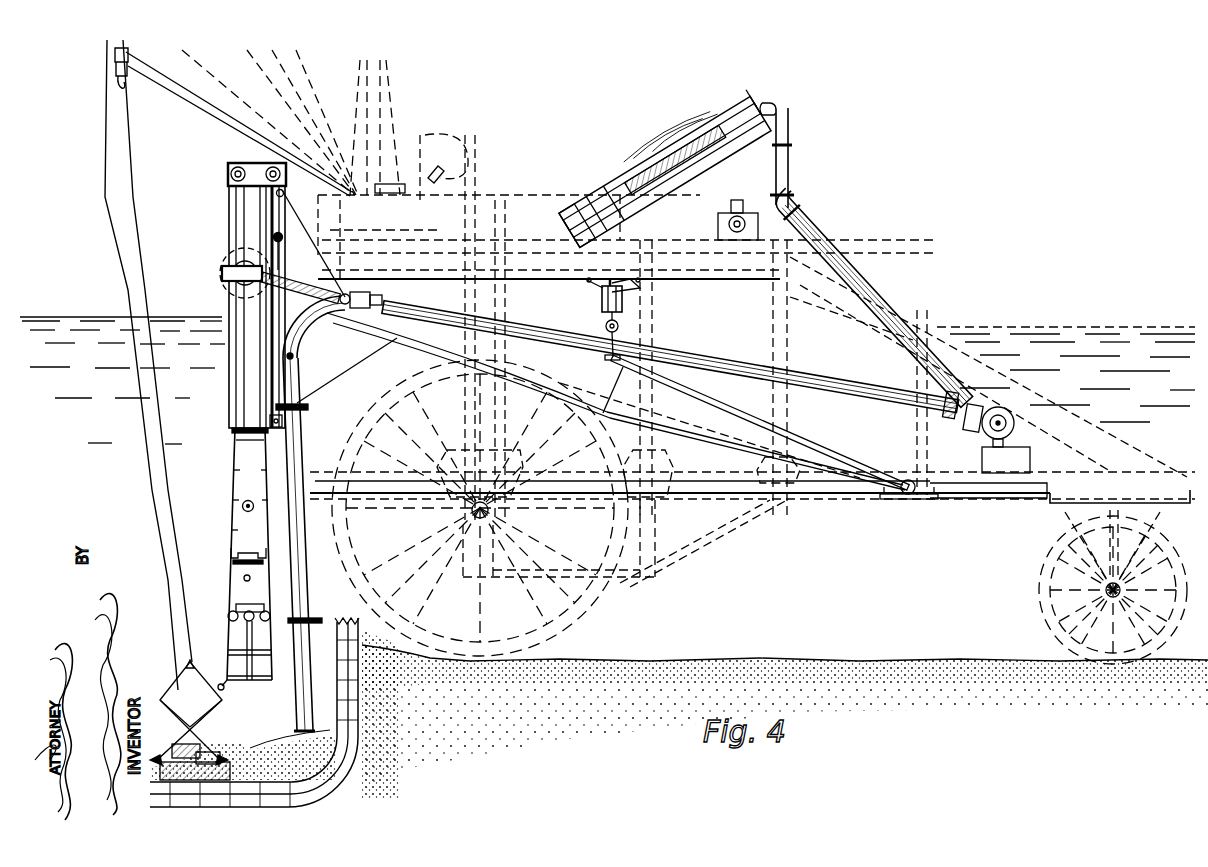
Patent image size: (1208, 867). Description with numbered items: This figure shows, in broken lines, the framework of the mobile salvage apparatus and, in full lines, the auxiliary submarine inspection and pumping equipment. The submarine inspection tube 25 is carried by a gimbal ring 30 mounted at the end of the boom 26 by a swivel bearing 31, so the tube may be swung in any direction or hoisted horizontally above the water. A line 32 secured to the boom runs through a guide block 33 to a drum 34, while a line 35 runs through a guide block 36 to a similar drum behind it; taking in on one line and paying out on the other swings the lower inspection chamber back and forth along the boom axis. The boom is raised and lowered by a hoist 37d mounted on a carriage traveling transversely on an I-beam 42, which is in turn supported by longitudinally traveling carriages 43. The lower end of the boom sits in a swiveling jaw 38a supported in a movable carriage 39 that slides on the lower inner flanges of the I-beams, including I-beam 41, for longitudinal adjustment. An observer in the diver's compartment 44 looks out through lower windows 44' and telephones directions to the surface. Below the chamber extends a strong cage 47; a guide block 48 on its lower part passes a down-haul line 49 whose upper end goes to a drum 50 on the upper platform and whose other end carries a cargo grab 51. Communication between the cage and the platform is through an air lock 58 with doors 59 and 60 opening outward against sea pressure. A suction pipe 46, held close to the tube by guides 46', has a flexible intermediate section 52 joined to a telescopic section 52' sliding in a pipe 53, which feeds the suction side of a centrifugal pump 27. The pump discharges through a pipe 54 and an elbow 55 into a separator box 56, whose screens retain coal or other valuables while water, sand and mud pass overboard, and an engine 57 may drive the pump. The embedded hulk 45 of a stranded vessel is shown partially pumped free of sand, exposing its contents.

The submarine inspection tube 25 is at (234, 420).
The boom 26 is at (590, 364).
The centrifugal pump 27 is at (990, 430).
The gimbal ring 30 is at (222, 274).
The swivel bearing 31 is at (301, 275).
The line 32 is at (280, 234).
The guide block 33 is at (293, 192).
The drum 34 is at (286, 174).
The line 35 is at (347, 370).
The guide block 36 is at (273, 430).
The hoist 37d is at (631, 360).
The swiveling jaw 38a is at (900, 480).
The movable carriage 39 is at (905, 502).
The I-beam 41 is at (805, 505).
The I-beam 42 is at (612, 282).
The carriage 43 is at (602, 298).
The diver's compartment 44 is at (438, 445).
The lower windows 44' is at (231, 612).
The hulk 45 is at (352, 770).
The suction pipe 46 is at (308, 544).
The guides 46' is at (315, 513).
The cage 47 is at (228, 650).
The guide block 48 is at (225, 688).
The down-haul line 49 is at (231, 553).
The drum 50 is at (228, 172).
The cargo grab 51 is at (162, 700).
The flexible intermediate section 52 is at (316, 326).
The telescopic section 52' is at (366, 323).
The pipe 53 is at (410, 305).
The pipe 54 is at (815, 262).
The elbow 55 is at (788, 118).
The separator box 56 is at (680, 148).
The engine 57 is at (742, 222).
The air lock 58 is at (249, 498).
The door 59 is at (249, 554).
The door 60 is at (258, 576).